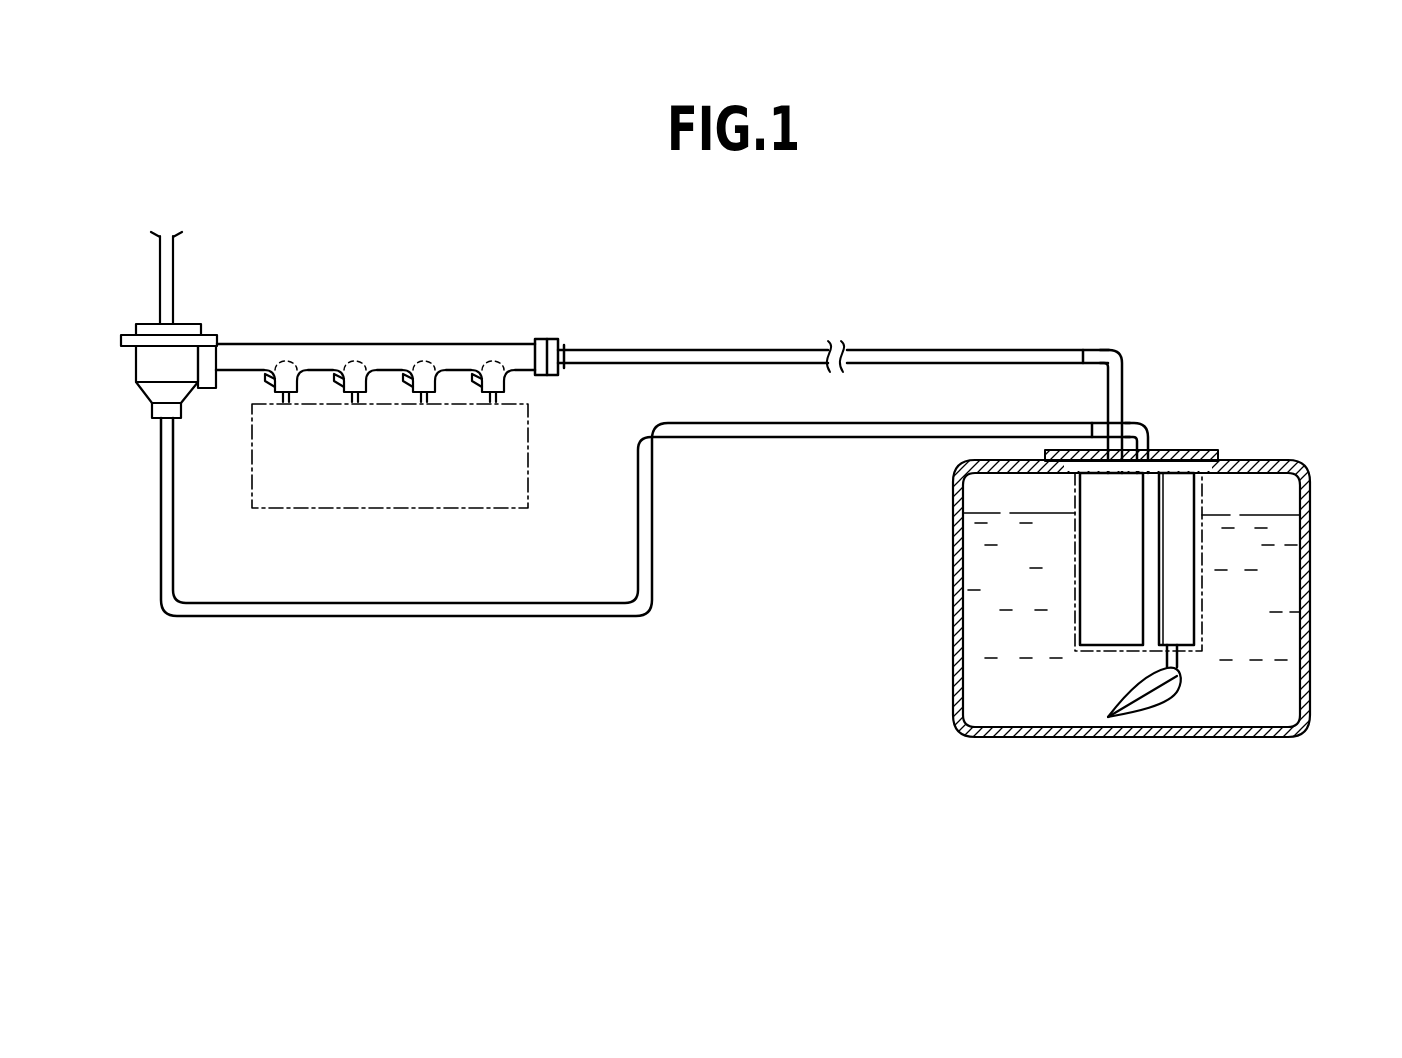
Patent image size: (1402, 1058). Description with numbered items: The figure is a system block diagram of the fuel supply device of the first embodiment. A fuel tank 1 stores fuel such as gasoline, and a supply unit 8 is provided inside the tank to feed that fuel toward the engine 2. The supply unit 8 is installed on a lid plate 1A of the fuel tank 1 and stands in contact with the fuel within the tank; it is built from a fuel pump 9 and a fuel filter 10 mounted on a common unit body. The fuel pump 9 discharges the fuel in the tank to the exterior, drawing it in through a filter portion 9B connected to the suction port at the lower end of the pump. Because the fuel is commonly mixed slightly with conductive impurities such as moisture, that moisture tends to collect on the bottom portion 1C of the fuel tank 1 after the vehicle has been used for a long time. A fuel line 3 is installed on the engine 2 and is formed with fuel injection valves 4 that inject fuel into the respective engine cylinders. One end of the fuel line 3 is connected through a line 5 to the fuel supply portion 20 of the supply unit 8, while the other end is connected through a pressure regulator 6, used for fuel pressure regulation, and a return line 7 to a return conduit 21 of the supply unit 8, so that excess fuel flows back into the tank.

The fuel tank 1 is at (1310, 675).
The lid plate 1A is at (1200, 453).
The bottom portion 1C is at (1247, 740).
The engine 2 is at (390, 495).
The fuel line 3 is at (354, 353).
The fuel injection valve 4 is at (285, 372).
The line 5 is at (760, 350).
The pressure regulator 6 is at (148, 365).
The return line 7 is at (750, 430).
The supply unit 8 is at (1208, 598).
The fuel pump 9 is at (1182, 628).
The filter portion 9B is at (1153, 700).
The fuel filter 10 is at (1095, 625).
The fuel supply portion 20 is at (1108, 358).
The return conduit 21 is at (1138, 427).